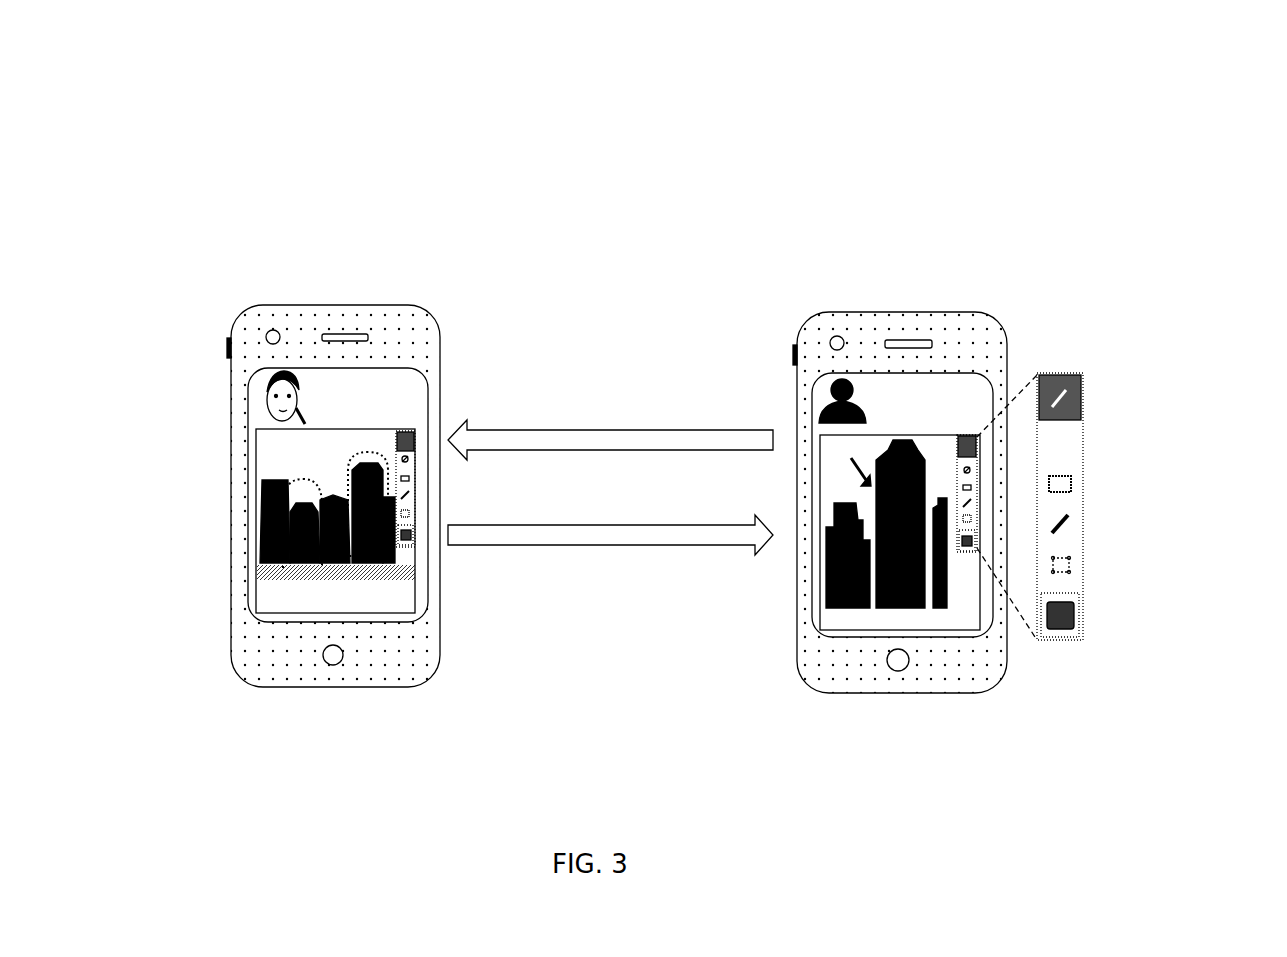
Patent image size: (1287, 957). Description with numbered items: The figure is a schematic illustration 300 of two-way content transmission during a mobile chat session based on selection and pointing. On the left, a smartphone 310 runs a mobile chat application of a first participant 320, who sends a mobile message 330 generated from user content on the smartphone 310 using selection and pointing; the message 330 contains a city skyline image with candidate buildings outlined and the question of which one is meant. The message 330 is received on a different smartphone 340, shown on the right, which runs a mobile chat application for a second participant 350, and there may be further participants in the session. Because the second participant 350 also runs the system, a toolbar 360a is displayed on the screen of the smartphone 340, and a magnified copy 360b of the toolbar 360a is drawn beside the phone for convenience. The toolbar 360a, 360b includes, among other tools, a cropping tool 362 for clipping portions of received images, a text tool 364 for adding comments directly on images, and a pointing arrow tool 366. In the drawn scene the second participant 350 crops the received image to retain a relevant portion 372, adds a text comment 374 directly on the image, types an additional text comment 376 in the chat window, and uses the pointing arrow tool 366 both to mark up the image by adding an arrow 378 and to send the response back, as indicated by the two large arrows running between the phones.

The schematic illustration 300 is at (670, 369).
The smartphone 310 is at (228, 320).
The first participant 320 is at (258, 405).
The mobile message 330 is at (270, 470).
The smartphone 340 is at (797, 325).
The second participant 350 is at (817, 393).
The toolbar 360a is at (968, 437).
The magnified copy of the toolbar 360b is at (1065, 367).
The cropping tool 362 is at (1073, 562).
The text tool 364 is at (1073, 440).
The pointing arrow tool 366 is at (1080, 392).
The relevant portion 372 is at (826, 537).
The text comment 374 is at (820, 445).
The additional text comment 376 is at (820, 620).
The arrow 378 is at (845, 472).